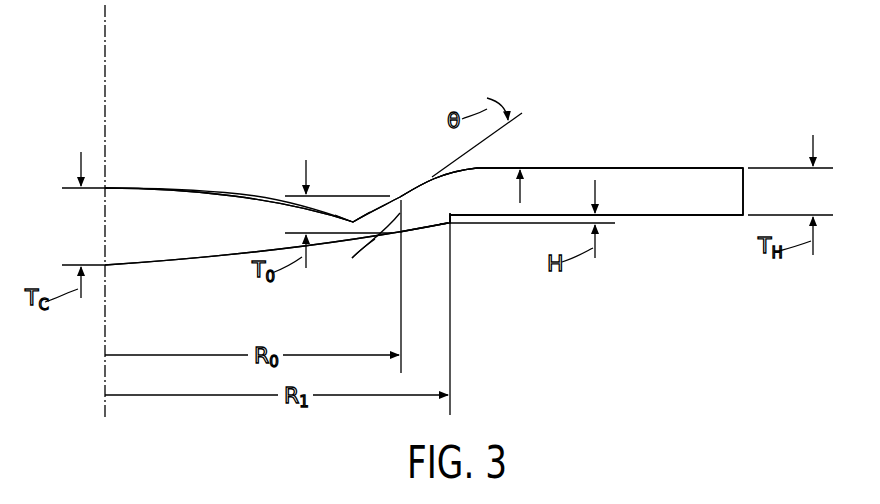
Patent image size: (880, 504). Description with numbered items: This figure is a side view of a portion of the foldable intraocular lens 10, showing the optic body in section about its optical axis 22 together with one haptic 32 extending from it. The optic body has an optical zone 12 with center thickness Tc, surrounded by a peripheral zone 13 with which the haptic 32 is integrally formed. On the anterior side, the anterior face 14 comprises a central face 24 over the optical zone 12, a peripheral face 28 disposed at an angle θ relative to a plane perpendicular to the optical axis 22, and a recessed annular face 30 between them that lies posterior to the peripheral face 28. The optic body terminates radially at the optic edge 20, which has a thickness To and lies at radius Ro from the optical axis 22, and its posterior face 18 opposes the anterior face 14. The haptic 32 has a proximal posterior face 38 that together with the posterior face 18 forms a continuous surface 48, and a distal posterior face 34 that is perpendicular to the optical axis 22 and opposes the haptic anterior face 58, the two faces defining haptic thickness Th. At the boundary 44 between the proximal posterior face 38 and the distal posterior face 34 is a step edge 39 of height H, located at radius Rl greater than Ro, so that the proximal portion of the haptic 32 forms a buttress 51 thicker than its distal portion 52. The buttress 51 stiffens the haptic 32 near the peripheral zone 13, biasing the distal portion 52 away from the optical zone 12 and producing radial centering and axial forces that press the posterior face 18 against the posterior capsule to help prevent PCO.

The intraocular lens 10 is at (323, 76).
The optical zone 12 is at (214, 164).
The peripheral zone 13 is at (512, 321).
The anterior face 14 is at (160, 187).
The posterior face 18 is at (164, 267).
The optic edge 20 is at (352, 257).
The optical axis 22 is at (105, 88).
The central face 24 is at (238, 193).
The peripheral face 28 is at (387, 199).
The recessed annular face 30 is at (352, 221).
The haptic 32 is at (636, 138).
The distal posterior face 34 is at (663, 217).
The proximal posterior face 38 is at (422, 234).
The step edge 39 is at (456, 222).
The boundary 44 is at (454, 230).
The continuous surface 48 is at (389, 258).
The buttress 51 is at (420, 180).
The distal portion 52 is at (726, 148).
The anterior face 58 is at (663, 167).